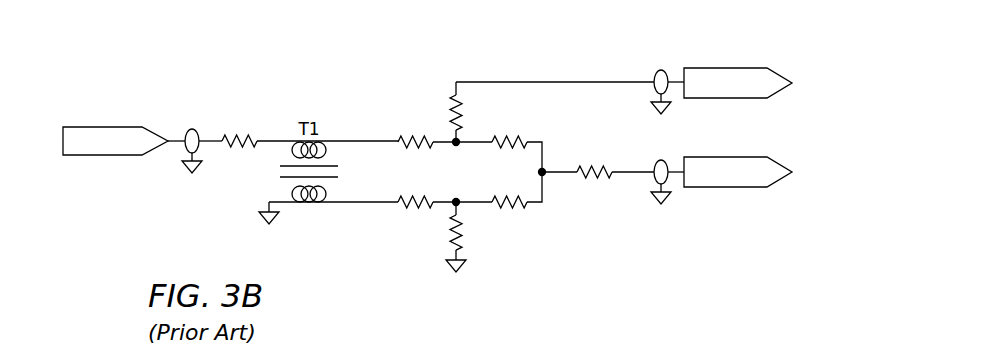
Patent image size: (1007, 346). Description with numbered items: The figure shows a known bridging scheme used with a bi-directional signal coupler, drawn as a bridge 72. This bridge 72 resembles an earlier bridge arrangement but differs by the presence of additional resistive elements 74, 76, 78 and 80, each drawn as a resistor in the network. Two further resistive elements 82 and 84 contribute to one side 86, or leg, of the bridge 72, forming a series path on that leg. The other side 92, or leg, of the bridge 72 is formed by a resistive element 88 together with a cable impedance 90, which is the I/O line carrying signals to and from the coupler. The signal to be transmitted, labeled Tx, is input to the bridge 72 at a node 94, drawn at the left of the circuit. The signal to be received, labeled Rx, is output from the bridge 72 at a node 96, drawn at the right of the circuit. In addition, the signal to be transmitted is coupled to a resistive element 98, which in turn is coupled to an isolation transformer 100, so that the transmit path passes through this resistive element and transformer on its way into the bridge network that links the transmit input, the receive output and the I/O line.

The bridge 72 is at (530, 63).
The resistive element 74 is at (607, 170).
The resistive element 76 is at (398, 207).
The resistive element 78 is at (405, 138).
The resistive element 80 is at (462, 125).
The resistive element 82 is at (523, 140).
The resistive element 84 is at (525, 205).
The side of bridge 86 is at (547, 258).
The resistive element 88 is at (452, 238).
The cable impedance (I/O line) 90 is at (712, 68).
The other side of bridge 92 is at (413, 75).
The node 94 is at (108, 157).
The node 96 is at (736, 187).
The resistive element 98 is at (240, 137).
The isolation transformer 100 is at (285, 177).